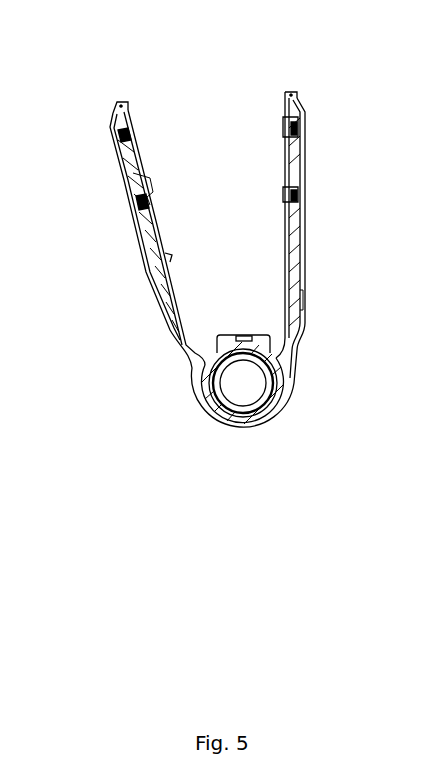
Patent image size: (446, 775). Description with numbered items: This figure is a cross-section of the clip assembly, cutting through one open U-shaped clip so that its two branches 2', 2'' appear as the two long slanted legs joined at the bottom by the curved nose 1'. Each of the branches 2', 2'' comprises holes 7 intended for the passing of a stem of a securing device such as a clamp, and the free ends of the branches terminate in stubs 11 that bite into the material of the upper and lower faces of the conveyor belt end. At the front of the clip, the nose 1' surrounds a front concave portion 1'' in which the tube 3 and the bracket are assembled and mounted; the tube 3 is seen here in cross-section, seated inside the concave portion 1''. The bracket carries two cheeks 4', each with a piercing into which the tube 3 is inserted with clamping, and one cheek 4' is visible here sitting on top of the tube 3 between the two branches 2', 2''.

The stub 11 is at (119, 104).
The hole 7 is at (118, 137).
The branch 2' is at (333, 237).
The branch 2'' is at (116, 235).
The cheek 4' is at (230, 307).
The tube 3 is at (221, 400).
The nose 1' is at (242, 456).
The front concave portion 1'' is at (297, 427).